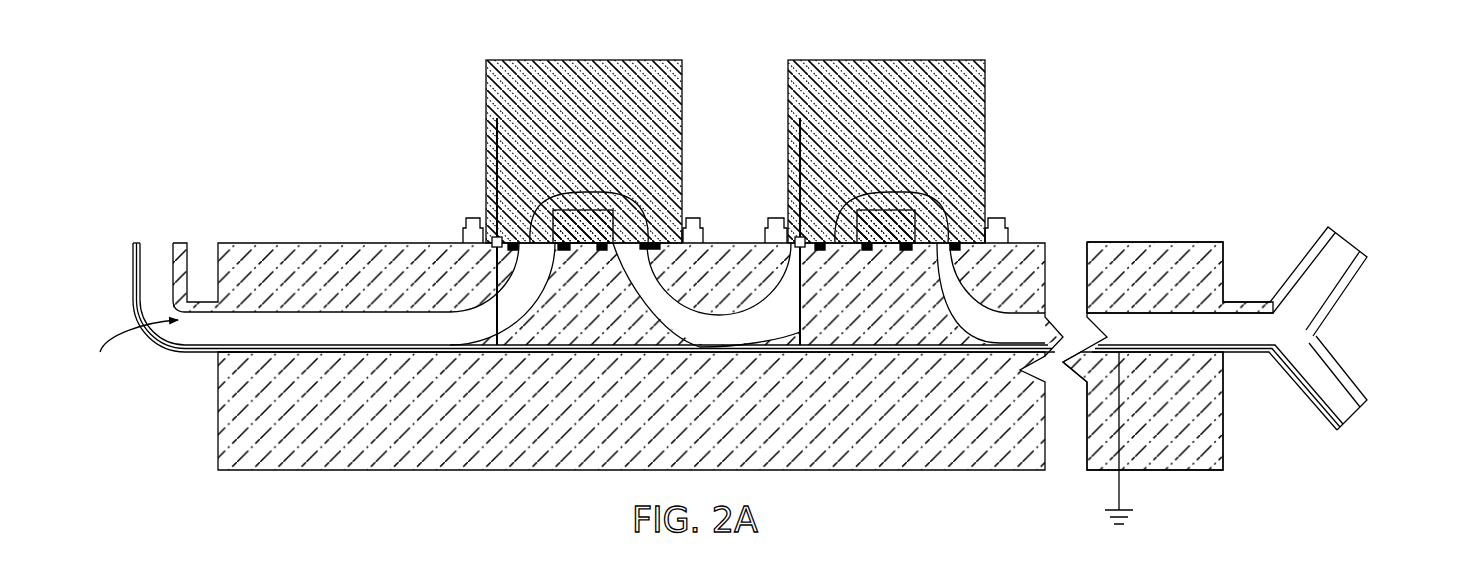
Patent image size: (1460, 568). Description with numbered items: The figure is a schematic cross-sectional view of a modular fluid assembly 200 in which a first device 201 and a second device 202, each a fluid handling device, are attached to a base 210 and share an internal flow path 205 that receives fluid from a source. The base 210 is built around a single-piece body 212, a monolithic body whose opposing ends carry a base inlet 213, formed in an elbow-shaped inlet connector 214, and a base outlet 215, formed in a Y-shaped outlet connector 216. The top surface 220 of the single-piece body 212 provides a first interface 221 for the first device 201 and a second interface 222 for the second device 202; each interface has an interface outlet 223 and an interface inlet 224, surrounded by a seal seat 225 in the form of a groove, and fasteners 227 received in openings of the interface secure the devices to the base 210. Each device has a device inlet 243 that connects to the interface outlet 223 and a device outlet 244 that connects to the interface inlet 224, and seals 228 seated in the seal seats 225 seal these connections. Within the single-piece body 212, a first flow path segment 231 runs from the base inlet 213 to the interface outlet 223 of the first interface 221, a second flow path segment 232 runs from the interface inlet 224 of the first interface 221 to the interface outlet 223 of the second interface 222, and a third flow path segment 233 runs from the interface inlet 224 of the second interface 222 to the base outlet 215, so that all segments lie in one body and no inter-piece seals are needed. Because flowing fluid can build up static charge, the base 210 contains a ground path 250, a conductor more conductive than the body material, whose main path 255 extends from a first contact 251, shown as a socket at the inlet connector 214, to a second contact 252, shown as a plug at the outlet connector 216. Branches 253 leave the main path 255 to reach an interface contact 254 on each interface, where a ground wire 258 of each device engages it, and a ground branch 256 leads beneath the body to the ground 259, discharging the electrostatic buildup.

The modular fluid assembly 200 is at (1264, 92).
The first device 201 is at (532, 60).
The second device 202 is at (838, 60).
The internal flow path 205 is at (119, 343).
The base 210 is at (1252, 473).
The single-piece body 212 is at (1160, 472).
The base inlet 213 is at (155, 243).
The inlet connector 214 is at (133, 280).
The base outlet 215 is at (1350, 243).
The outlet connector 216 is at (1335, 352).
The top surface 220 is at (230, 243).
The first interface 221 is at (664, 238).
The second interface 222 is at (975, 240).
The interface outlet 223 is at (517, 268).
The interface inlet 224 is at (641, 243).
The seal seat 225 is at (520, 250).
The fastener 227 is at (473, 218).
The seals 228 is at (490, 147).
The first flow path segment 231 is at (345, 340).
The second flow path segment 232 is at (755, 340).
The third flow path segment 233 is at (1043, 339).
The device inlet 243 is at (567, 195).
The device outlet 244 is at (612, 200).
The ground path 250 is at (165, 350).
The first contact 251 is at (133, 249).
The second contact 252 is at (1338, 432).
The branches 253 is at (494, 282).
The interface contact 254 is at (491, 250).
The main path 255 is at (240, 353).
The ground branch 256 is at (1119, 488).
The ground wire 258 is at (497, 118).
The ground 259 is at (1130, 522).